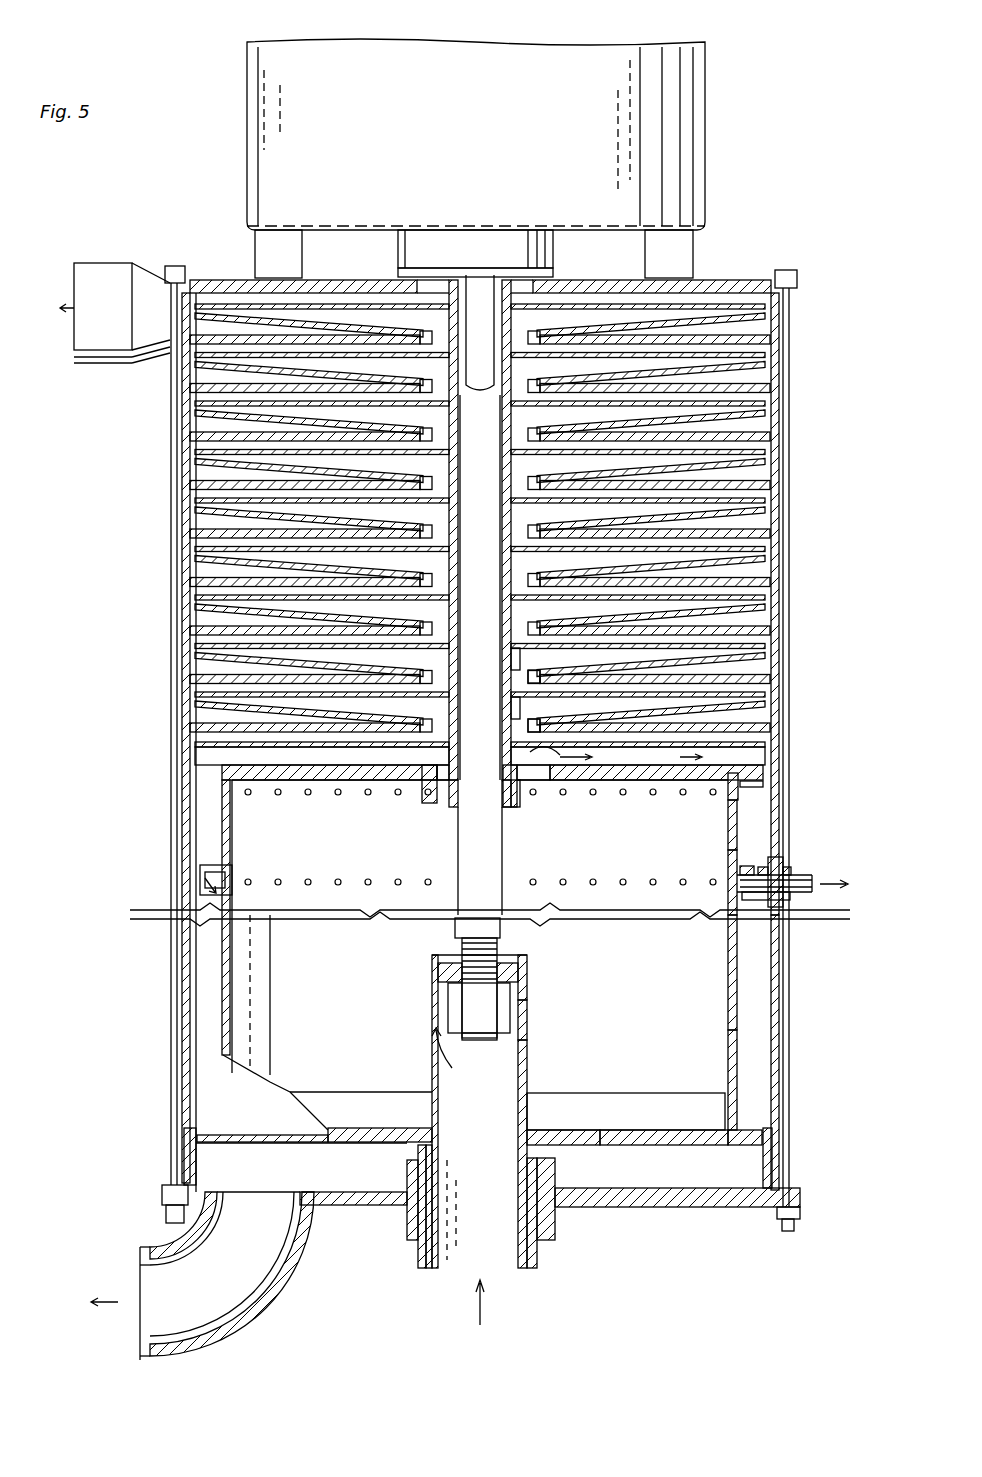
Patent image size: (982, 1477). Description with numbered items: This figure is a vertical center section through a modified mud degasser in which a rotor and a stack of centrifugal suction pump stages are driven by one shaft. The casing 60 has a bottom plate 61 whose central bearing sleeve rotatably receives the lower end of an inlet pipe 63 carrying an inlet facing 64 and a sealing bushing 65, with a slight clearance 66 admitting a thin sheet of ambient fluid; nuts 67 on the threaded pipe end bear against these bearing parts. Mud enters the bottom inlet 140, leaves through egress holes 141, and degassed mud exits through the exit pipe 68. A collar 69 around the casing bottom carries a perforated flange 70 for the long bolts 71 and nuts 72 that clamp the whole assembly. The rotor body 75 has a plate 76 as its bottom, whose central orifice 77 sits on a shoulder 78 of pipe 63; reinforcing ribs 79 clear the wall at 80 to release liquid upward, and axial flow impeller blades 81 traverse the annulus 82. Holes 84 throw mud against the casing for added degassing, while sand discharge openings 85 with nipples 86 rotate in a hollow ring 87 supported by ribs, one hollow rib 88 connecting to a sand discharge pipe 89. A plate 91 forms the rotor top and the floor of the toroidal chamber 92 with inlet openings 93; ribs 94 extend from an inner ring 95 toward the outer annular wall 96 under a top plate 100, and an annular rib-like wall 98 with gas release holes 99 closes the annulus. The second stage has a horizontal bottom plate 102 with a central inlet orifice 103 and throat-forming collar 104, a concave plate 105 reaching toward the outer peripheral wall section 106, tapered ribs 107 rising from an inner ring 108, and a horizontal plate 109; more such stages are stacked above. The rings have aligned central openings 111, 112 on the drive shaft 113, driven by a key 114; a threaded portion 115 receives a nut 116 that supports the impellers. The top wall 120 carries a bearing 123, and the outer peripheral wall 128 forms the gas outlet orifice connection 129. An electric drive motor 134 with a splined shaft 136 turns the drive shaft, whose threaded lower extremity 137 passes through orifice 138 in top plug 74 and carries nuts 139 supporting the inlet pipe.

The casing 60 is at (779, 990).
The bottom plate 61 is at (348, 1205).
The inlet pipe 63 is at (432, 1000).
The inlet facing 64 is at (428, 1160).
The sealing bushing 65 is at (430, 1178).
The clearance 66 is at (407, 1188).
The nuts 67 is at (555, 1262).
The exit pipe 68 is at (275, 1300).
The collar 69 is at (775, 1150).
The flange 70 is at (800, 1195).
The long bolts 71 is at (178, 955).
The nuts 72 is at (800, 1220).
The top plug 74 is at (438, 974).
The rotor body 75 is at (728, 950).
The plate 76 is at (675, 1140).
The central orifice 77 is at (520, 1138).
The shoulder 78 is at (560, 1138).
The reinforcing ribs 79 is at (697, 1095).
The clearance 80 is at (735, 1100).
The axial flow impeller blades 81 is at (285, 1135).
The annulus 82 is at (755, 970).
The holes 84 is at (660, 790).
The sand discharge openings 85 is at (652, 882).
The nipples 86 is at (740, 868).
The hollow ring 87 is at (745, 862).
The hollow rib 88 is at (770, 855).
The sand discharge pipe 89 is at (800, 875).
The plate 91 is at (350, 780).
The toroidal chamber 92 is at (735, 744).
The inlet openings 93 is at (517, 752).
The ribs 94 is at (750, 778).
The inner ring 95 is at (410, 785).
The outer annular wall 96 is at (740, 766).
The annular rib-like wall 98 is at (763, 795).
The gas release holes 99 is at (215, 790).
The top plate 100 is at (710, 758).
The horizontal bottom plate 102 is at (690, 735).
The central inlet orifice 103 is at (530, 740).
The throat-forming collar 104 is at (526, 707).
The concave plate 105 is at (735, 697).
The outer peripheral wall section 106 is at (748, 692).
The tapered ribs 107 is at (740, 718).
The inner ring 108 is at (520, 706).
The horizontal plate 109 is at (745, 690).
The central opening 111 is at (525, 735).
The central opening 112 is at (513, 702).
The drive shaft 113 is at (465, 850).
The key 114 is at (453, 513).
The threaded portion 115 is at (476, 793).
The nut 116 is at (515, 790).
The top wall 120 is at (735, 280).
The bearing 123 is at (442, 240).
The outer peripheral wall 128 is at (779, 325).
The gas outlet orifice connection 129 is at (120, 372).
The electric drive motor 134 is at (720, 108).
The splined shaft 136 is at (478, 290).
The threaded lower extremity 137 is at (462, 948).
The orifice 138 is at (527, 970).
The nuts 139 is at (510, 1000).
The bottom inlet 140 is at (495, 1265).
The egress holes 141 is at (528, 1040).